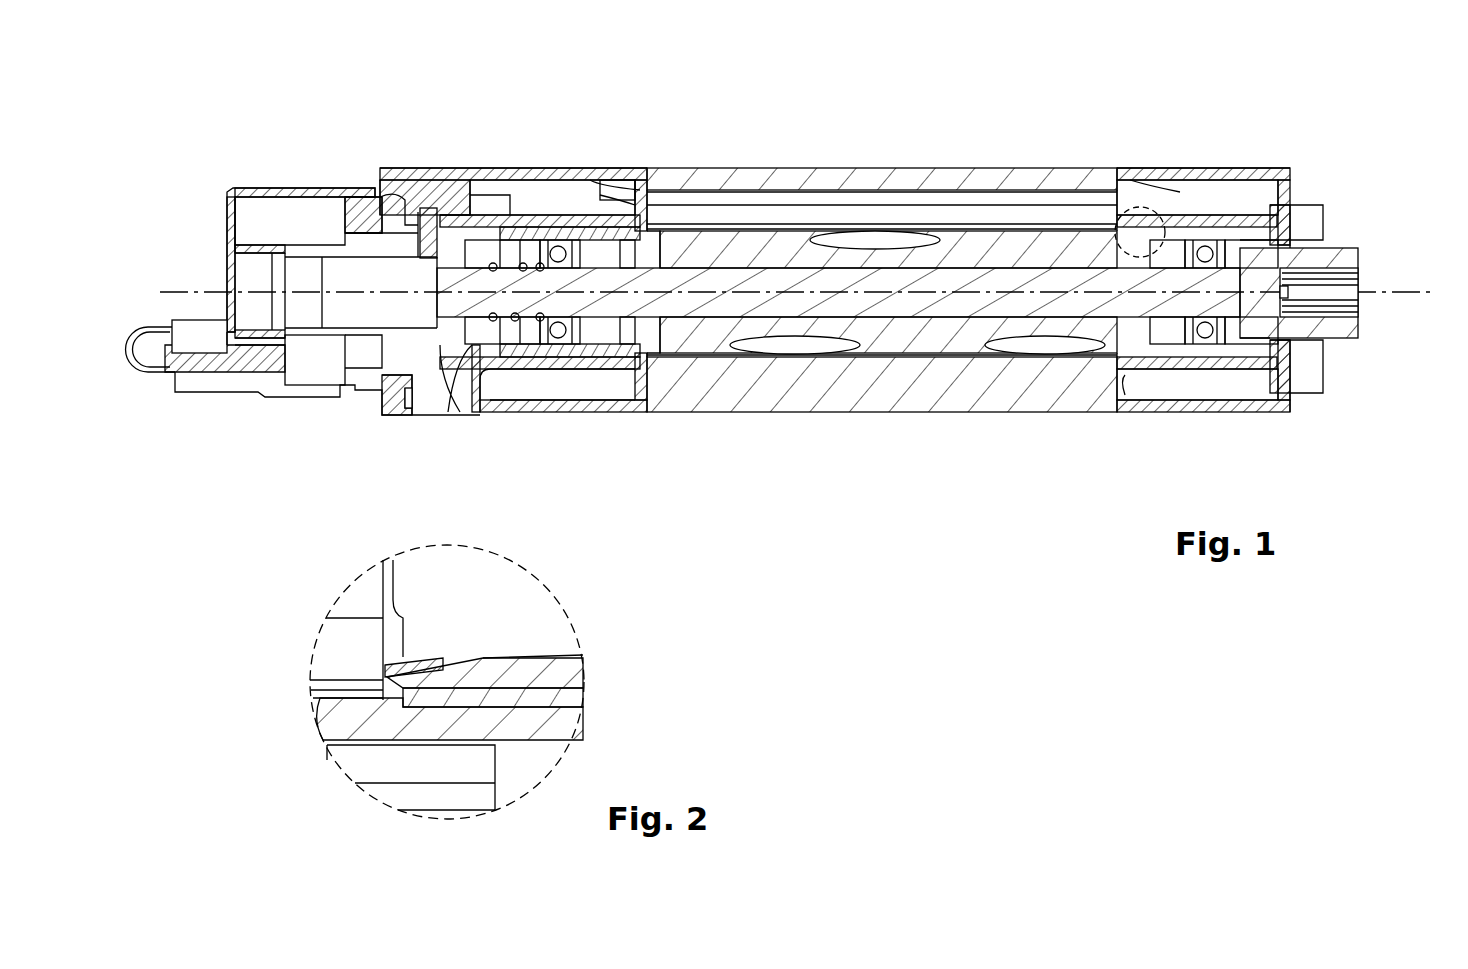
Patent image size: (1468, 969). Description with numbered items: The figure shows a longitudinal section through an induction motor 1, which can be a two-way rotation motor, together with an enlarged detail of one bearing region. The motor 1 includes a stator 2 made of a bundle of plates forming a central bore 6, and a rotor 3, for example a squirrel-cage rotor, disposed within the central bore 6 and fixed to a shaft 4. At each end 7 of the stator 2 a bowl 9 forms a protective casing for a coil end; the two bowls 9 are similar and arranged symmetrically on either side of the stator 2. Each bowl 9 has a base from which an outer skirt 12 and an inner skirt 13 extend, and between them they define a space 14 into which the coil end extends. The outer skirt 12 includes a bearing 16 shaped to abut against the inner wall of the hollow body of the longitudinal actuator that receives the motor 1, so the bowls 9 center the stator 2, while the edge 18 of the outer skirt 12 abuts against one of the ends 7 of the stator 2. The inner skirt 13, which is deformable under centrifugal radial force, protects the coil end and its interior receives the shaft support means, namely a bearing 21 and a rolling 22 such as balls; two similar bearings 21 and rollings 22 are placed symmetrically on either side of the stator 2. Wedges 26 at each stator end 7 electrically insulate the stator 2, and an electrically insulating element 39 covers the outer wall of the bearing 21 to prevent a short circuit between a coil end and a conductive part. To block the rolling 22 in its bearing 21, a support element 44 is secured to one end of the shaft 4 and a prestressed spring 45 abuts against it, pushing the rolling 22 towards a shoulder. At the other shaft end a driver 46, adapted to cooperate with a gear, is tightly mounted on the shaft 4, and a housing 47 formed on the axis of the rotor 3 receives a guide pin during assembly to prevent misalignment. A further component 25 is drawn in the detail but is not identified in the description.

In FIG. 1, the induction motor 1 is at (1027, 145).
In FIG. 1, the stator 2 is at (773, 168).
In FIG. 1, the rotor 3 is at (882, 300).
In FIG. 2, the rotor 3 is at (362, 765).
In FIG. 1, the shaft 4 is at (775, 305).
In FIG. 1, the central bore 6 is at (800, 245).
In FIG. 1, the end 7 is at (600, 178).
In FIG. 1, the bowl 9 is at (478, 160).
In FIG. 1, the outer skirt 12 is at (535, 410).
In FIG. 1, the inner skirt 13 is at (600, 370).
In FIG. 1, the space 14 is at (485, 168).
In FIG. 1, the bearing 16 is at (532, 168).
In FIG. 1, the edge 18 is at (670, 168).
In FIG. 1, the bearing 21 is at (575, 355).
In FIG. 2, the bearing 21 is at (548, 738).
In FIG. 1, the rolling 22 is at (520, 352).
In FIG. 1, the sleeve 25 is at (558, 178).
In FIG. 2, the sleeve 25 is at (575, 658).
In FIG. 1, the wedges 26 is at (622, 370).
In FIG. 2, the wedges 26 is at (425, 655).
In FIG. 2, the electrically insulating element 39 is at (487, 688).
In FIG. 1, the support element 44 is at (428, 405).
In FIG. 1, the prestressed spring 45 is at (470, 390).
In FIG. 1, the driver 46 is at (1340, 248).
In FIG. 1, the housing 47 is at (1288, 292).